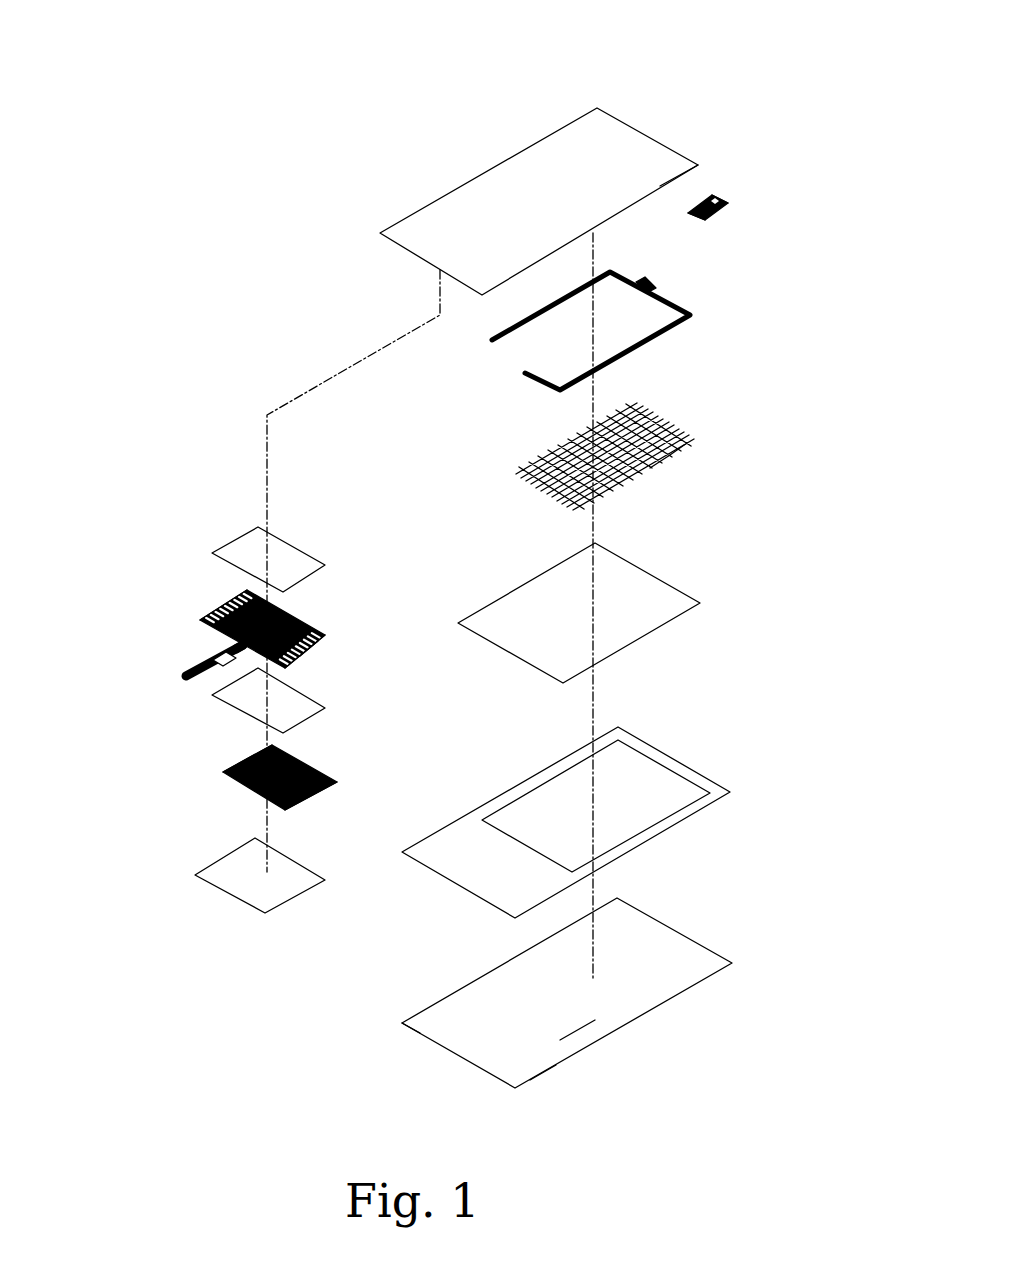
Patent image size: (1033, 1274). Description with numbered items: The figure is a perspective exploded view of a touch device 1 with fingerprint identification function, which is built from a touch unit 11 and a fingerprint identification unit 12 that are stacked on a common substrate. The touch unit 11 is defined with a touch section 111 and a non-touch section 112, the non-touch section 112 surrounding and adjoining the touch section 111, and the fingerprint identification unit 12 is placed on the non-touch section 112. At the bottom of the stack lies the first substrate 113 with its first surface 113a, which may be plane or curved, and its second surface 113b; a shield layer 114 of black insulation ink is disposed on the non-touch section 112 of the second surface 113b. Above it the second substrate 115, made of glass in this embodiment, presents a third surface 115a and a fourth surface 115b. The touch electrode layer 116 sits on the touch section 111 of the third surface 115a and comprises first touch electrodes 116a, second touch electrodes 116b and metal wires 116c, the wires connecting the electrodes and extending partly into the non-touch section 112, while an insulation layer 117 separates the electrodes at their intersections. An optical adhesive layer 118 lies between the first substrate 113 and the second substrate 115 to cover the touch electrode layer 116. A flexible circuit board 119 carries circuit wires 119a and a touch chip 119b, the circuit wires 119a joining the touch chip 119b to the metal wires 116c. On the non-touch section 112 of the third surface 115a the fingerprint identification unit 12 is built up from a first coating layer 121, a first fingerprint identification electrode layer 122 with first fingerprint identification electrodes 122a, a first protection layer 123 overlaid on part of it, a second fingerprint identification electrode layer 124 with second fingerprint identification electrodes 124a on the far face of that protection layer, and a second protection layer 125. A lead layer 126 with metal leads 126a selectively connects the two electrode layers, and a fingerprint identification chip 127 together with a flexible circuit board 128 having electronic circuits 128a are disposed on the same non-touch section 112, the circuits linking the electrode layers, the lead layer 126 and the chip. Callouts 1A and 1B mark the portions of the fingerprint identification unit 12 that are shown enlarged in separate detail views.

The touch device 1 is at (172, 95).
The touch unit 11 is at (760, 173).
The fingerprint identification unit 12 is at (148, 467).
The touch section 111 is at (507, 1018).
The non-touch section 112 is at (422, 1032).
The first substrate 113 is at (585, 1133).
The first surface 113a is at (543, 1073).
The second surface 113b is at (579, 1032).
The shield layer 114 is at (558, 770).
The second substrate 115 is at (680, 42).
The third surface 115a is at (683, 190).
The fourth surface 115b is at (627, 165).
The touch electrode layer 116 is at (636, 391).
The first touch electrodes 116a is at (673, 455).
The second touch electrodes 116b is at (688, 446).
The metal wires 116c is at (692, 317).
The insulation layer 117 is at (671, 432).
The optical adhesive layer 118 is at (622, 630).
The flexible circuit board 119 is at (750, 263).
The circuit wires 119a is at (692, 218).
The touch chip 119b is at (730, 205).
The first coating layer 121 is at (302, 568).
The first fingerprint identification electrode layer 122 is at (395, 612).
The first fingerprint identification electrodes 122a is at (325, 630).
The first protection layer 123 is at (320, 700).
The second fingerprint identification electrode layer 124 is at (354, 803).
The second fingerprint identification electrodes 124a is at (294, 796).
The second protection layer 125 is at (322, 880).
The lead layer 126 is at (395, 655).
The metal leads 126a is at (318, 650).
The fingerprint identification chip 127 is at (215, 655).
The flexible circuit board 128 is at (190, 670).
The electronic circuits 128a is at (205, 658).
The upper electrode assembly 1A is at (285, 624).
The lower electrode assembly 1B is at (270, 794).